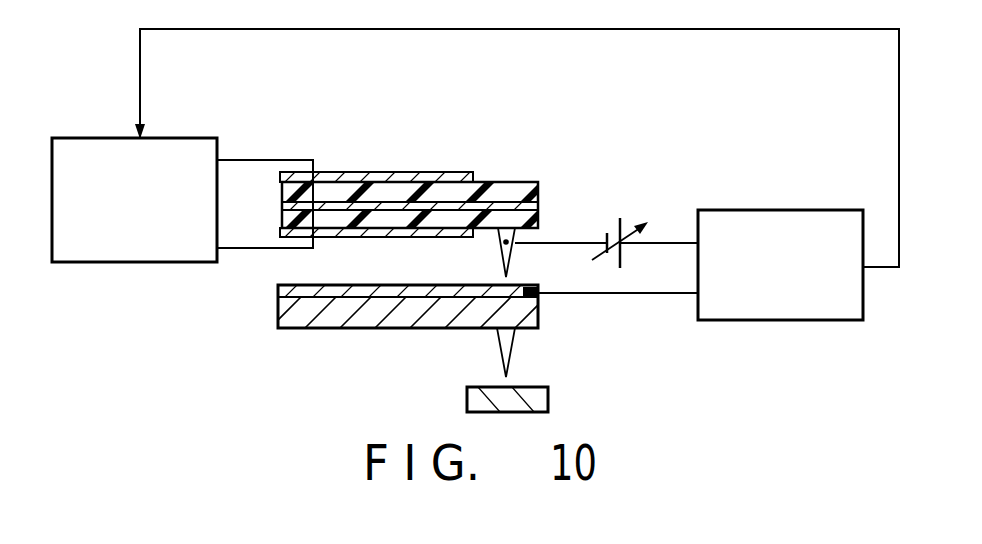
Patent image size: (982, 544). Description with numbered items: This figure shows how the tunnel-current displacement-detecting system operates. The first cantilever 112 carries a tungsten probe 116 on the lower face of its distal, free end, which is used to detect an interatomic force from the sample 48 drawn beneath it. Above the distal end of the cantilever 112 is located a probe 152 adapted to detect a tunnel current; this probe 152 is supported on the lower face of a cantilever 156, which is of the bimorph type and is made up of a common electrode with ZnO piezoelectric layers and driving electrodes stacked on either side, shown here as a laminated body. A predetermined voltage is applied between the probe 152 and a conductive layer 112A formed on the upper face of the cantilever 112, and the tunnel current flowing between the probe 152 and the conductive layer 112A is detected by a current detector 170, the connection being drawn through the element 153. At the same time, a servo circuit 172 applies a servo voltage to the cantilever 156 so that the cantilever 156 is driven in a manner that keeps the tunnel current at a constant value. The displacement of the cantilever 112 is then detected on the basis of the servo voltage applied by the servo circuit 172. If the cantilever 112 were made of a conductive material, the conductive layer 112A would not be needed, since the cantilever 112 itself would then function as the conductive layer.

The servo circuit 172 is at (175, 138).
The current detector 170 is at (788, 209).
The cantilever 156 is at (522, 171).
The probe 152 is at (510, 248).
The variable capacitor 153 is at (615, 218).
The first cantilever 112 is at (408, 321).
The conductive layer 112A is at (390, 290).
The probe 116 is at (513, 349).
The sample / recording medium 48 is at (548, 396).